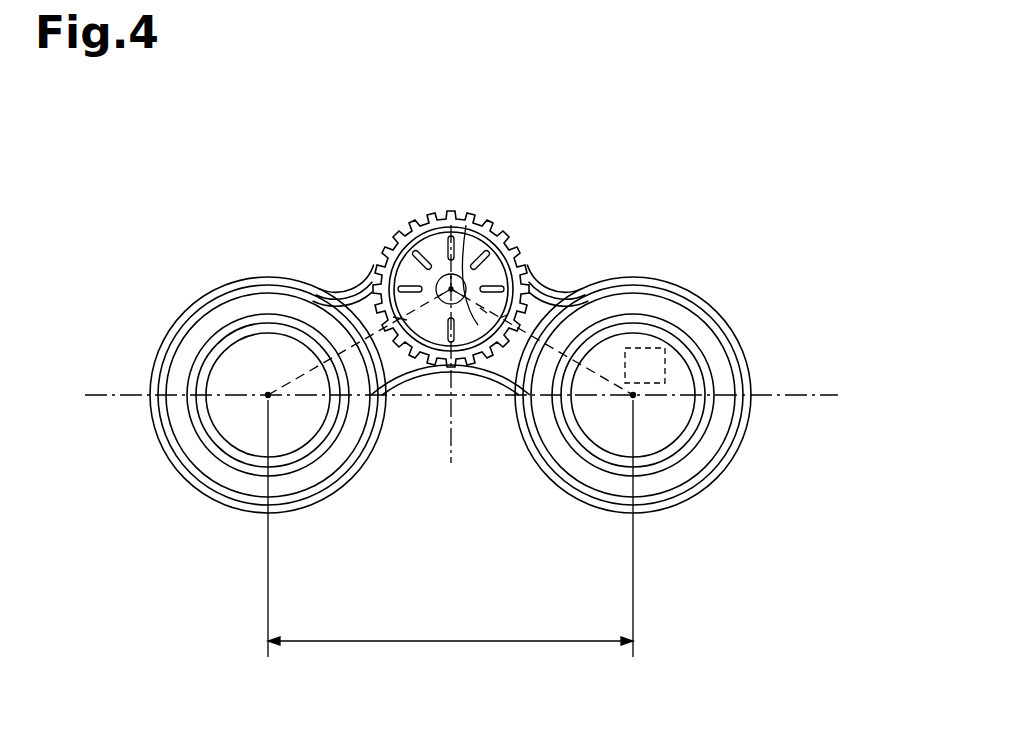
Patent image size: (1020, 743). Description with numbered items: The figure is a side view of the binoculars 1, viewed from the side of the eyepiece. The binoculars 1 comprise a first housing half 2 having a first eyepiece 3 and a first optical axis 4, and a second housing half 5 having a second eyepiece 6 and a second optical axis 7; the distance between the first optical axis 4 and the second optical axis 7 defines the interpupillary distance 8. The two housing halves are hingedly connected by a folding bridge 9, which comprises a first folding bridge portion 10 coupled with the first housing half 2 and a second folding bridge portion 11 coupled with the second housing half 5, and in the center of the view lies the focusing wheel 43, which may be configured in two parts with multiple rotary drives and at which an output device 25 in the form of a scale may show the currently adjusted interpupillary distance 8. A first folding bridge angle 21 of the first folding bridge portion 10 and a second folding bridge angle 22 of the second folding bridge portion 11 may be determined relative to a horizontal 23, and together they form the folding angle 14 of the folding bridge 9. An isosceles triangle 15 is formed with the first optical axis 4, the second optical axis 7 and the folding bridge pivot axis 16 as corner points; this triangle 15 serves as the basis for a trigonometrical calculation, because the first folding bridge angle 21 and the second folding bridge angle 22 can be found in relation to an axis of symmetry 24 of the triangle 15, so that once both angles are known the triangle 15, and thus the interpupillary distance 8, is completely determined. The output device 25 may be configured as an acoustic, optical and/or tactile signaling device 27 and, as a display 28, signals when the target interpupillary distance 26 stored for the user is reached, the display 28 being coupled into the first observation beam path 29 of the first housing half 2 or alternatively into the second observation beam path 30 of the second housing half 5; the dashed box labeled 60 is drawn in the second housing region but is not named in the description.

The binoculars 1 is at (812, 113).
The first housing half 2 is at (748, 275).
The first eyepiece 3 is at (720, 462).
The first optical axis 4 is at (660, 473).
The second housing half 5 is at (180, 282).
The second eyepiece 6 is at (168, 463).
The second optical axis 7 is at (256, 464).
The interpupillary distance 8 is at (450, 528).
The folding bridge 9 is at (348, 236).
The first folding bridge portion 10 is at (552, 268).
The second folding bridge portion 11 is at (340, 287).
The folding angle 14 is at (485, 377).
The isosceles triangle 15 is at (548, 356).
The folding bridge pivot axis 16 is at (478, 225).
The first folding bridge angle 21 is at (405, 240).
The second folding bridge angle 22 is at (518, 250).
The horizontal 23 is at (800, 394).
The axis of symmetry 24 is at (450, 453).
The output device 25 is at (649, 335).
The target interpupillary distance 26 is at (462, 640).
The signaling device 27 is at (649, 335).
The display 28 is at (652, 340).
The first observation beam path 29 is at (633, 395).
The second observation beam path 30 is at (268, 395).
The focusing wheel 43 is at (424, 325).
The sensor 60 is at (645, 365).